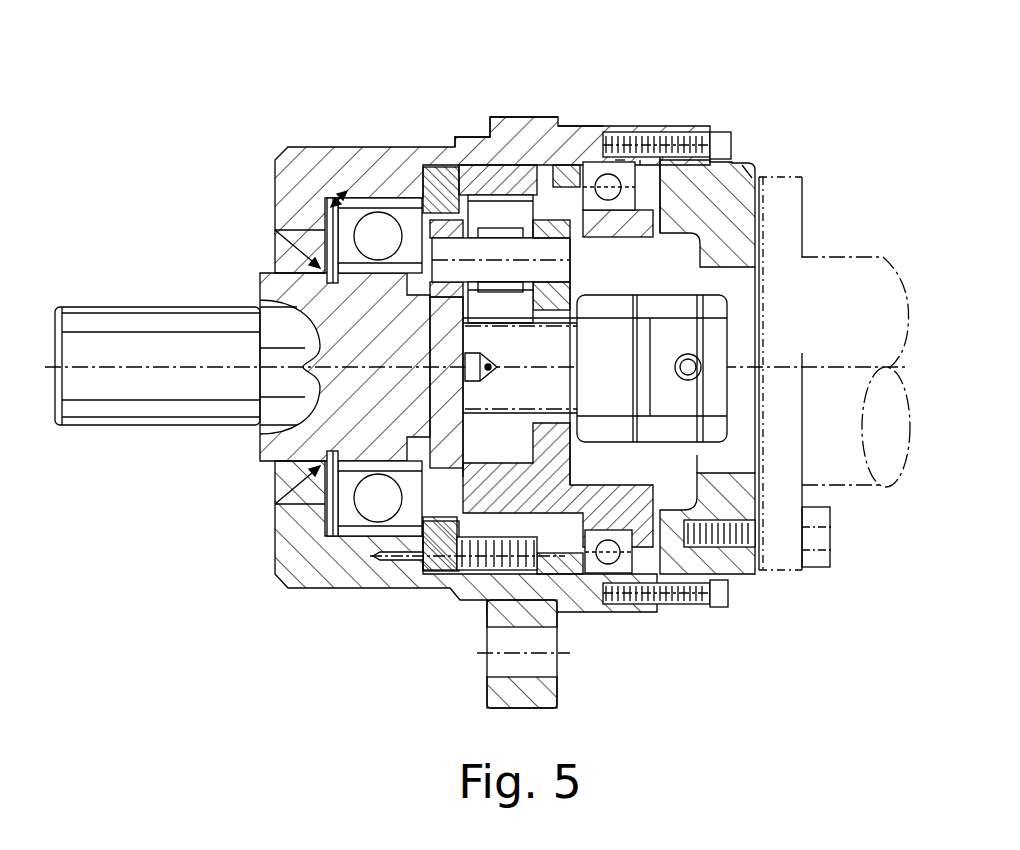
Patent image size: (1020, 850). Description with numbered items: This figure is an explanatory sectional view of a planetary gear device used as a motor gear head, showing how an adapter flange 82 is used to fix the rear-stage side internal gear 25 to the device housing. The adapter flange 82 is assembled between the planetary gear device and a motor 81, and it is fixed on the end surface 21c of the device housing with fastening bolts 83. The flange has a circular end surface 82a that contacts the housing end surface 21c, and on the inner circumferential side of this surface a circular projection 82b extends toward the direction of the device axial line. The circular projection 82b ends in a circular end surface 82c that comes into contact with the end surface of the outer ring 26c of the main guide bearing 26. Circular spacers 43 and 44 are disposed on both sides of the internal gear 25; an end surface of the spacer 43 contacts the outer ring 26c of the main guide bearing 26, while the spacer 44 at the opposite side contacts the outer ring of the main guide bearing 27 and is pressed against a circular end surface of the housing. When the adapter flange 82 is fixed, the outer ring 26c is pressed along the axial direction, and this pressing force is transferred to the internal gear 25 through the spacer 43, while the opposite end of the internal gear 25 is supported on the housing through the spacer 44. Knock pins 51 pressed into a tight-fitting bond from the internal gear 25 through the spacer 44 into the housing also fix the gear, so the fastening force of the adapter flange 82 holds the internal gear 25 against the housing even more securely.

The end surface 21c is at (653, 135).
The internal gear 25 is at (440, 150).
The main guide bearing 26 is at (533, 148).
The outer ring 26c is at (653, 247).
The main guide bearing 27 is at (280, 158).
The circular spacer 43 is at (500, 150).
The circular spacer 44 is at (365, 150).
The knock pins 51 is at (377, 567).
The motor 81 is at (825, 257).
The adapter flange 82 is at (743, 167).
The circular end surface 82a is at (640, 145).
The circular projection 82b is at (620, 148).
The circular end surface 82c is at (572, 150).
The fastening bolts 83 is at (723, 147).